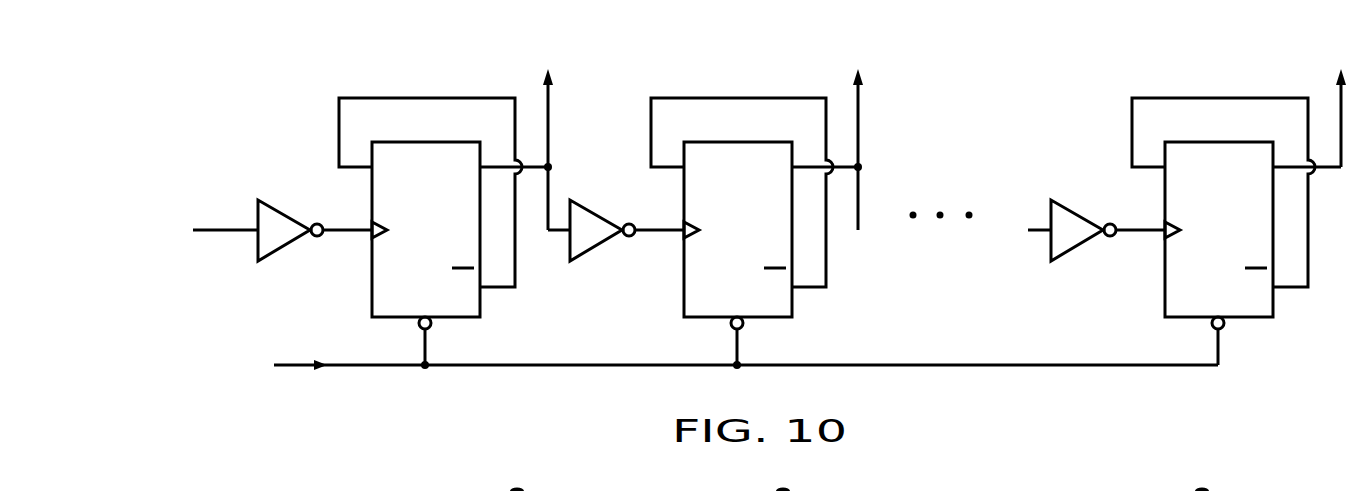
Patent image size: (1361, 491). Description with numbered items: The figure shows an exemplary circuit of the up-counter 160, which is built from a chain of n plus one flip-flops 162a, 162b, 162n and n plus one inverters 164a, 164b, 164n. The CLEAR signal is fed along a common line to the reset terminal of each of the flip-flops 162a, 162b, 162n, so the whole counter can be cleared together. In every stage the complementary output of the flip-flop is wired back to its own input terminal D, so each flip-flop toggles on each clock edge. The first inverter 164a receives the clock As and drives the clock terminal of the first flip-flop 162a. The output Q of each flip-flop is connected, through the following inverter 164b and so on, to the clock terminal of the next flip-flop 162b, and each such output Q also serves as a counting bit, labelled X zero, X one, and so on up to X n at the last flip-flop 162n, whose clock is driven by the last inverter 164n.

The up-counter 160 is at (226, 118).
The flip-flop 162a is at (372, 297).
The flip-flop 162b is at (684, 297).
The flip-flop 162n is at (1165, 297).
The inverter 164a is at (286, 214).
The inverter 164b is at (596, 214).
The inverter 164n is at (1079, 214).